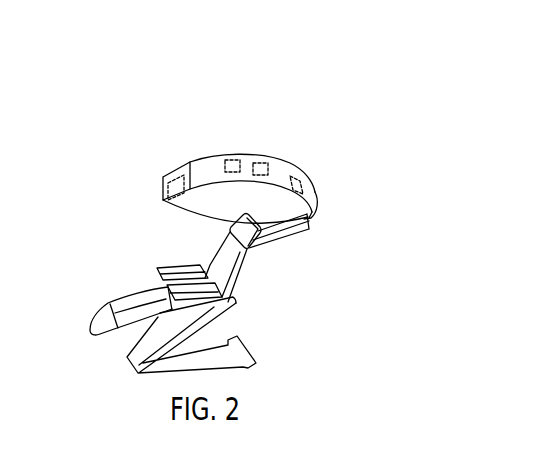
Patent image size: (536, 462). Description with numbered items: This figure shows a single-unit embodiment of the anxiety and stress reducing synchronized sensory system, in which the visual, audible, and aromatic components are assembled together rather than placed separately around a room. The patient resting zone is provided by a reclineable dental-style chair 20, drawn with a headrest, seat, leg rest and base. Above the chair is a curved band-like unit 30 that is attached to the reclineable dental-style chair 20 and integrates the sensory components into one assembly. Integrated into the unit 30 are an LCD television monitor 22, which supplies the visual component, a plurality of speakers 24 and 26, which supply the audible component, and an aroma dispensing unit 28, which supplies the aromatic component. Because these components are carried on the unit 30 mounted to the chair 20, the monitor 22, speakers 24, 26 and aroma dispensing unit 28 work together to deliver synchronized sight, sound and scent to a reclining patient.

The reclineable dental-style chair 20 is at (130, 291).
The LCD television monitor 22 is at (177, 174).
The speaker 24 is at (236, 157).
The speaker 26 is at (300, 175).
The aroma dispensing unit 28 is at (263, 160).
The unit 30 is at (318, 190).